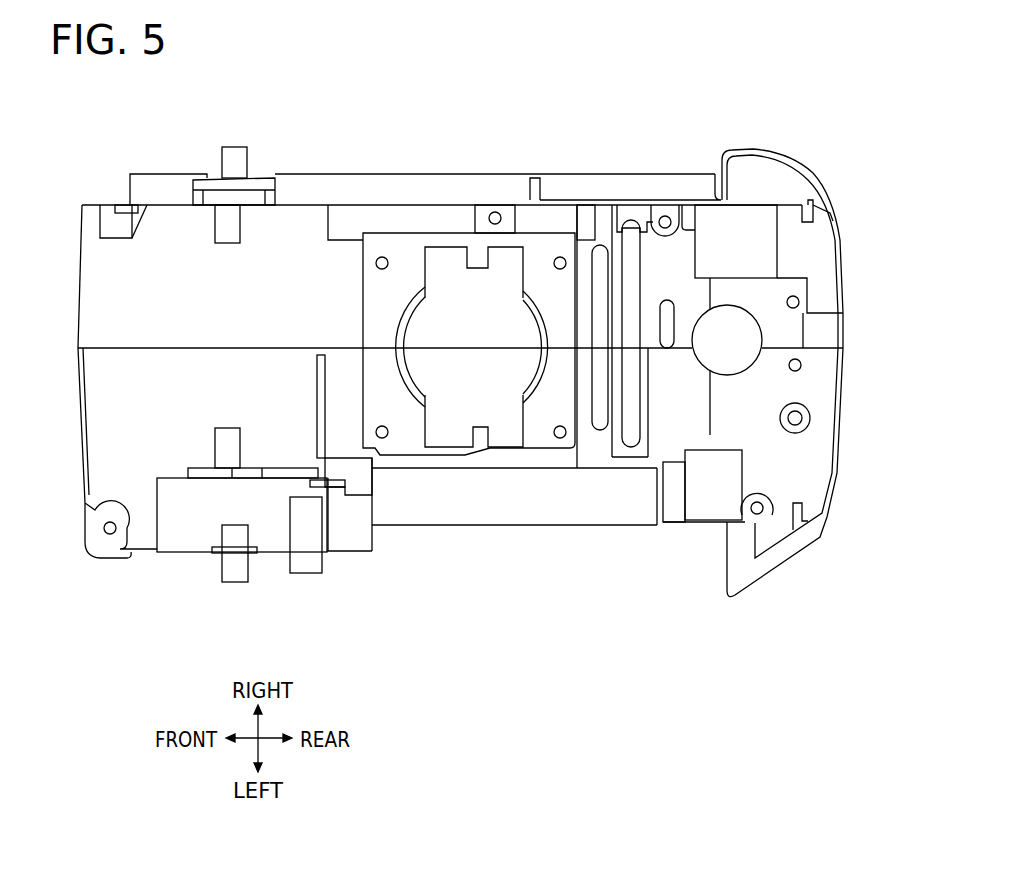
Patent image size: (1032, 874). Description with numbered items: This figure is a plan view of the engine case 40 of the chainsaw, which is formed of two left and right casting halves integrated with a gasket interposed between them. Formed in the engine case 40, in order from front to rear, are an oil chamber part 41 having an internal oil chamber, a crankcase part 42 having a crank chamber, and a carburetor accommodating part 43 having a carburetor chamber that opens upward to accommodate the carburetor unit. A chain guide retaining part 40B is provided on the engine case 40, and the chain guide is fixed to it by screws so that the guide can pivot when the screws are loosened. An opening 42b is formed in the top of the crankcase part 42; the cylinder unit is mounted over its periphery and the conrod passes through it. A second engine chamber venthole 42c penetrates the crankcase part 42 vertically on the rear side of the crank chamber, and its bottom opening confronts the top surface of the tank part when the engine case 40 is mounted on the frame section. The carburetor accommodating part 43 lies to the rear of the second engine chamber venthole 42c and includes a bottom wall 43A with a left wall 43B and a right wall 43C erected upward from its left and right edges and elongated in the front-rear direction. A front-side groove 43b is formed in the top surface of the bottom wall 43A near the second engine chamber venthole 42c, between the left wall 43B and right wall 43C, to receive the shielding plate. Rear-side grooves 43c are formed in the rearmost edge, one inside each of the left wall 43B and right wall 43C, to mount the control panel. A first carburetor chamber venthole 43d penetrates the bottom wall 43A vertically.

The engine case 40 is at (748, 95).
The chain guide retaining part 40B is at (175, 180).
The oil chamber part 41 is at (180, 528).
The crankcase part 42 is at (503, 527).
The opening 42b is at (540, 365).
The second engine chamber venthole 42c is at (607, 402).
The carburetor accommodating part 43 is at (757, 583).
The bottom wall 43A is at (660, 412).
The left wall 43B is at (695, 522).
The right wall 43C is at (664, 203).
The front-side groove 43b is at (632, 267).
The rear-side grooves 43c is at (831, 214).
The first carburetor chamber venthole 43d is at (718, 378).